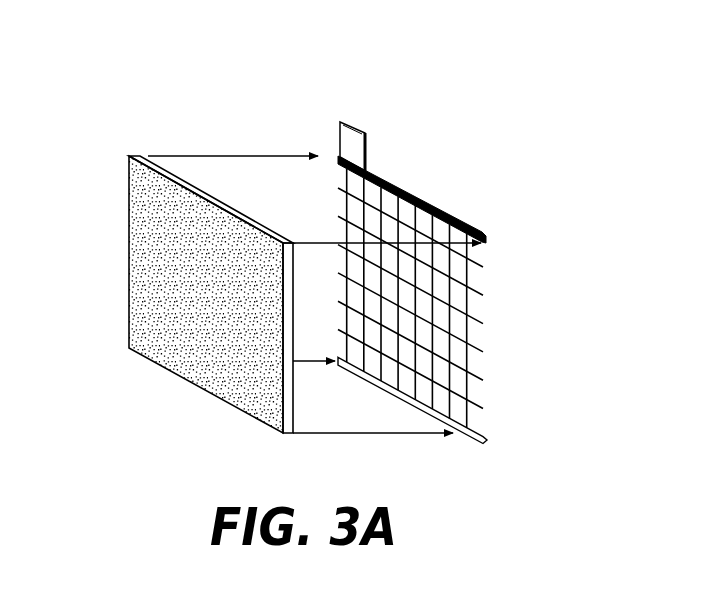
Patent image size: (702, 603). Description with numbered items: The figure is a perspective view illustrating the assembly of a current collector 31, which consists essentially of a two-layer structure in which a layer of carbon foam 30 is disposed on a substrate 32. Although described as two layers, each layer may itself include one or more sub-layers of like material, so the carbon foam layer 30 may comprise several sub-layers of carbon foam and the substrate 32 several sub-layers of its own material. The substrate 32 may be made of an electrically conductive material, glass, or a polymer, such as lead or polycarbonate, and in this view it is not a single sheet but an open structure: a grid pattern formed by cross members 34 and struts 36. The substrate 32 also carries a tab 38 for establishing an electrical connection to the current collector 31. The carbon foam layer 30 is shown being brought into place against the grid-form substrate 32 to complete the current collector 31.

The carbon foam layer 30 is at (147, 203).
The current collector 31 is at (265, 103).
The substrate 32 is at (462, 222).
The cross members 34 is at (466, 341).
The struts 36 is at (405, 197).
The tab 38 is at (348, 134).